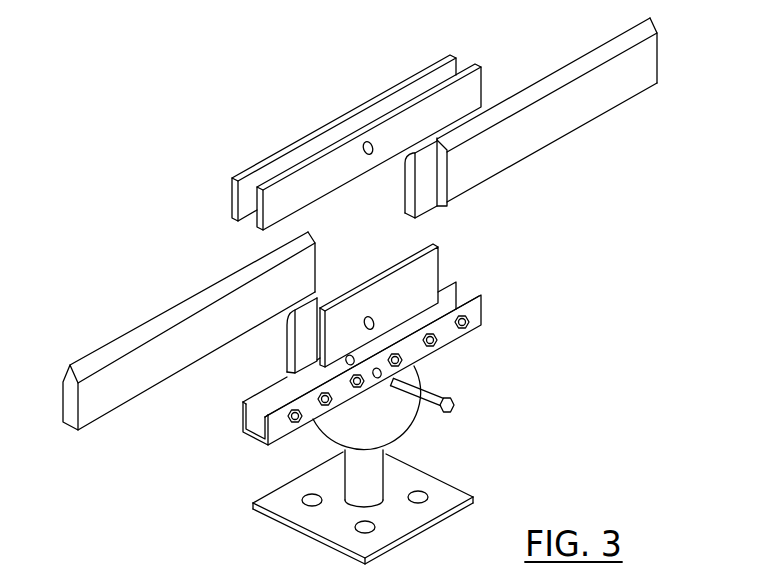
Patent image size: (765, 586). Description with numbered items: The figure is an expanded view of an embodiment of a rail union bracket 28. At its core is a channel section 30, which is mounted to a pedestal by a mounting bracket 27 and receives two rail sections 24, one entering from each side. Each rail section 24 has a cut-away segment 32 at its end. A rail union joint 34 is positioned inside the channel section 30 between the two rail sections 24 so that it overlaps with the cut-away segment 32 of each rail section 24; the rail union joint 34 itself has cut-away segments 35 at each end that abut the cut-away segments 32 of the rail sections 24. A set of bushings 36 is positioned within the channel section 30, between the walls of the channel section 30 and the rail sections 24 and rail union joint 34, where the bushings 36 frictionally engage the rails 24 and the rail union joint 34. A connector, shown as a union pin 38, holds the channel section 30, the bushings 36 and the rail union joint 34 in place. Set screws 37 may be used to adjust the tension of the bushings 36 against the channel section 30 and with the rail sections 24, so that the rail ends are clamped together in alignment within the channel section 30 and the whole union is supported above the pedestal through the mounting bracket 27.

The rail section 24 is at (563, 137).
The mounting bracket 27 is at (423, 406).
The rail union bracket 28 is at (287, 96).
The channel section 30 is at (489, 303).
The cut-away segment 32 is at (421, 190).
The rail union joint 34 is at (450, 271).
The cut-away segment 35 is at (306, 345).
The bushing 36 is at (457, 57).
The set screw 37 is at (296, 428).
The union pin 38 is at (453, 398).